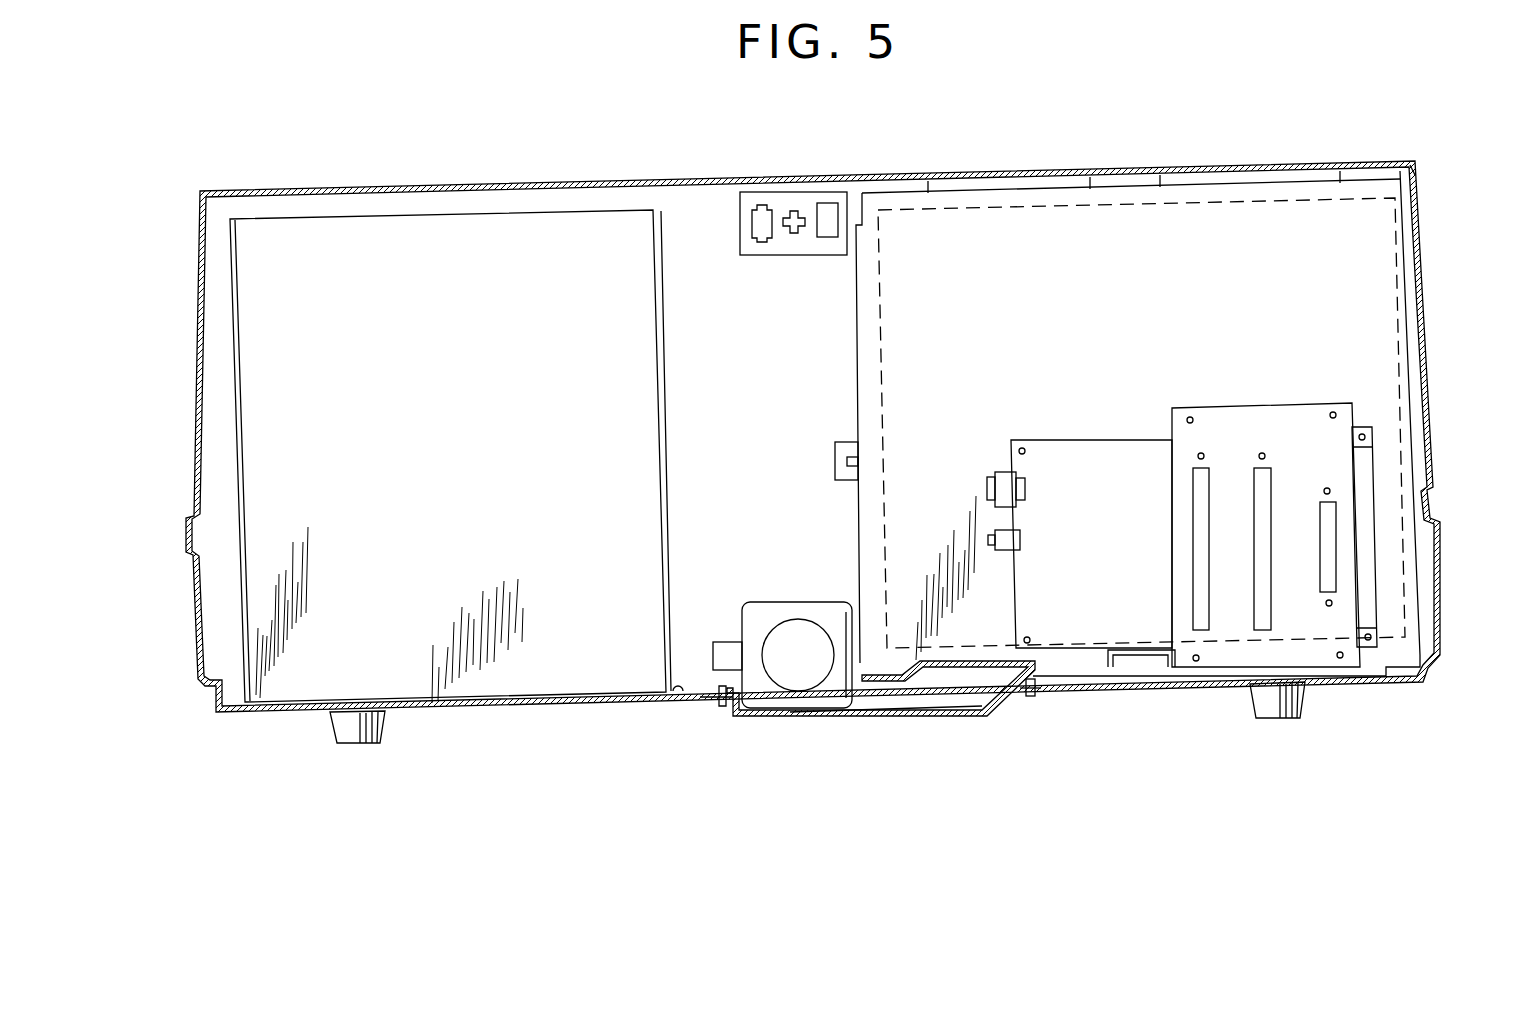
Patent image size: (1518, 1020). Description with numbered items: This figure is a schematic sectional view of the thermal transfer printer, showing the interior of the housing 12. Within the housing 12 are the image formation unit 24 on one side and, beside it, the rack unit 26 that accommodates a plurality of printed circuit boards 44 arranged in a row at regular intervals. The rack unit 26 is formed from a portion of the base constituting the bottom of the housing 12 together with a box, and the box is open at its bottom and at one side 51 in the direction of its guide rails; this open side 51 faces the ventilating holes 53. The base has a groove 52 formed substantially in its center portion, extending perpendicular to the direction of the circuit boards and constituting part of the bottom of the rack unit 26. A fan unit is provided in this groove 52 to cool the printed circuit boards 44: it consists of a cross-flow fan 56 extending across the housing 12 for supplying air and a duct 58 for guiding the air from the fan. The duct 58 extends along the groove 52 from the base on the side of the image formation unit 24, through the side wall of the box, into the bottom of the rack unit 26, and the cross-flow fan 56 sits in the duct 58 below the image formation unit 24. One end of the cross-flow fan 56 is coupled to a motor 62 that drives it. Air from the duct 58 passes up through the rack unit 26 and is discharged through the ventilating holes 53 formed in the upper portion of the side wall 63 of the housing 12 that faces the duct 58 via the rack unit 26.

The housing 12 is at (835, 410).
The image formation unit 24 is at (548, 236).
The rack unit 26 is at (1237, 193).
The printed circuit boards 44 is at (1159, 393).
The open side 51 is at (1406, 313).
The groove 52 is at (1000, 697).
The ventilating holes 53 is at (1434, 262).
The cross-flow fan 56 is at (782, 648).
The duct 58 is at (940, 697).
The motor 62 is at (792, 678).
The side wall 63 is at (1430, 190).